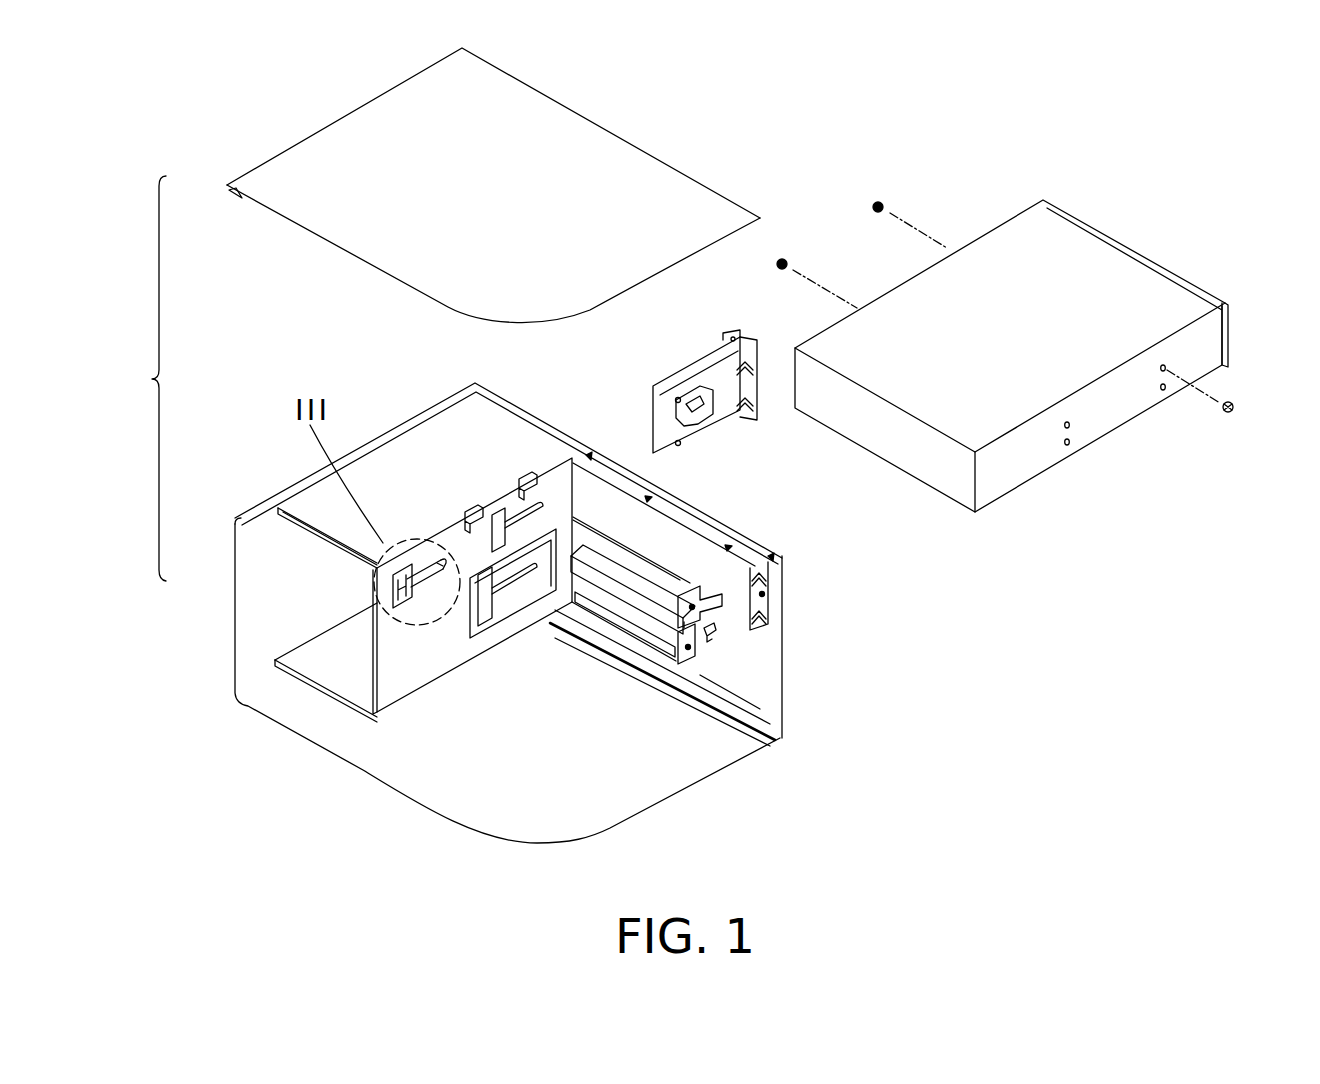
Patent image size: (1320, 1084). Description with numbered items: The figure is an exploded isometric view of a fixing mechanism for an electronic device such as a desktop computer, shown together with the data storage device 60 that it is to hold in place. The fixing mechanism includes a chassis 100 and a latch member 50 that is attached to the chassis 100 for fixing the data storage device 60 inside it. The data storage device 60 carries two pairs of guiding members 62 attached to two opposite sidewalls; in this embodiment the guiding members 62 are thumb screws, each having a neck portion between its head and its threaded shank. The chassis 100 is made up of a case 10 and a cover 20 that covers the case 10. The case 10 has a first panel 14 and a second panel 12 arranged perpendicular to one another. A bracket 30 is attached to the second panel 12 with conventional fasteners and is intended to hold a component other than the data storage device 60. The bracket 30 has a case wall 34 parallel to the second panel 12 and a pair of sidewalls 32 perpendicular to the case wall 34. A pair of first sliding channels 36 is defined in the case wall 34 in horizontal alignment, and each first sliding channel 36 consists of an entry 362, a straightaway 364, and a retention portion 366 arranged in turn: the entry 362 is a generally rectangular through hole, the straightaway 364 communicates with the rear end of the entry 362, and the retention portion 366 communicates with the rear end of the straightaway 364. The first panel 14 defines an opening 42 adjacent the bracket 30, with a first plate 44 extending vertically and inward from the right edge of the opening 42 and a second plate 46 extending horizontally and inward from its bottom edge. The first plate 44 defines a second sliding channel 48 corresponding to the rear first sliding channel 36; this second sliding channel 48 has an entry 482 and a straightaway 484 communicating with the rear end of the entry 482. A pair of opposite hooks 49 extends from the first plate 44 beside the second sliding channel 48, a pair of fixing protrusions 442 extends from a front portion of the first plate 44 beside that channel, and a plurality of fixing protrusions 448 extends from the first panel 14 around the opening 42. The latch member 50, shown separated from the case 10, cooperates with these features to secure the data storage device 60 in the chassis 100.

The chassis 100 is at (138, 378).
The case 10 is at (293, 476).
The second panel 12 is at (265, 580).
The first panel 14 is at (752, 661).
The cover 20 is at (295, 202).
The bracket 30 is at (318, 513).
The sidewalls 32 is at (460, 433).
The case wall 34 is at (557, 477).
The first sliding channels 36 is at (548, 868).
The entry 362 is at (402, 606).
The straightaway 364 is at (425, 590).
The retention portion 366 is at (442, 562).
The opening 42 is at (683, 540).
The fixing protrusions 442 is at (692, 606).
The first plate 44 is at (745, 590).
The fixing protrusions 448 is at (766, 594).
The second plate 46 is at (617, 548).
The second sliding channel 48 is at (827, 790).
The entry 482 is at (680, 634).
The straightaway 484 is at (772, 742).
The hooks 49 is at (714, 633).
The latch member 50 is at (682, 364).
The data storage device 60 is at (1128, 278).
The guiding members 62 is at (879, 200).